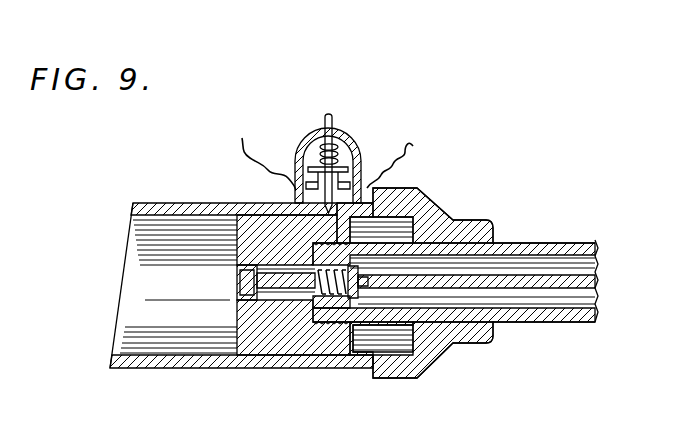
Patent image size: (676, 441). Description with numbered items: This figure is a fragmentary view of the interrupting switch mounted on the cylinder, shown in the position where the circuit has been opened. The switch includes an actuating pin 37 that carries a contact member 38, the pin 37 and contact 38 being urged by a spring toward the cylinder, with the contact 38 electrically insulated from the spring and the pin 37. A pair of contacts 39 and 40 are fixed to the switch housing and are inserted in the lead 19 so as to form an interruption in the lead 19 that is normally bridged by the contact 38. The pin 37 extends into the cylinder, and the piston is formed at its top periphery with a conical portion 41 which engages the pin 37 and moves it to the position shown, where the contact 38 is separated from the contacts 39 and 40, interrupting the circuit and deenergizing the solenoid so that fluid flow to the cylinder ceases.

The lead 19 is at (414, 146).
The actuating pin 37 is at (333, 112).
The contact member 38 is at (317, 143).
The contact 39 is at (363, 180).
The contact 40 is at (292, 172).
The conical portion 41 is at (348, 343).